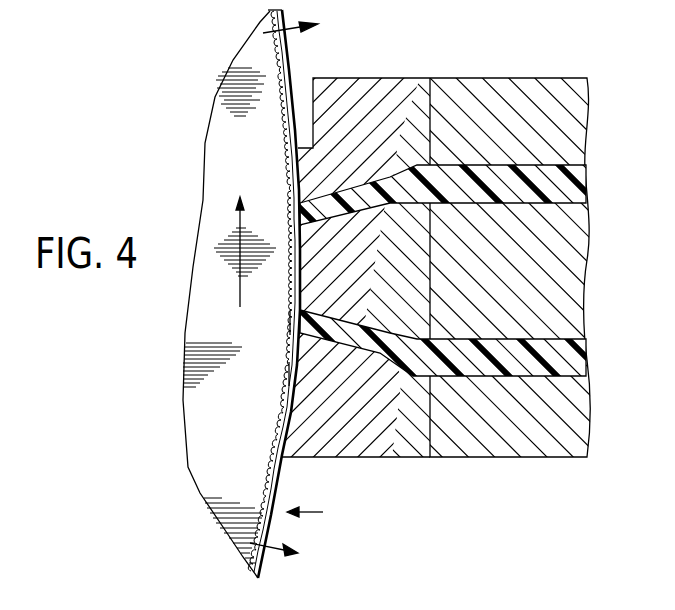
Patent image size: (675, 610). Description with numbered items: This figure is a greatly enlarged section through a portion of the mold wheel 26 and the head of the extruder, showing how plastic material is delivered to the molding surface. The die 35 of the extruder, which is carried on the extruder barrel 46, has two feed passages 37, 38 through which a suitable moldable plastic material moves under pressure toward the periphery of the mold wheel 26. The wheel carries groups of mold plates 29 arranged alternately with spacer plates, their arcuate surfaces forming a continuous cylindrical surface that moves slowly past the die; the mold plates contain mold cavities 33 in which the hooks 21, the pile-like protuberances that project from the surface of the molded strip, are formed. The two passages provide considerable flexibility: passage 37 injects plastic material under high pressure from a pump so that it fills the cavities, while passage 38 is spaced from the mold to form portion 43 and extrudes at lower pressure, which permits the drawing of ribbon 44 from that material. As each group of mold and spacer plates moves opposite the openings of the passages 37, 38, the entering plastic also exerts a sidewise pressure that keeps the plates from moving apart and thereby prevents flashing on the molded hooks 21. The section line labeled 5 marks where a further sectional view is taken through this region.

The section line 5- 5 is at (293, 290).
The hooks 21 is at (290, 335).
The mold wheel 26 is at (320, 513).
The mold plates 29 is at (233, 427).
The mold cavities 33 is at (289, 386).
The die 35 is at (369, 432).
The feed passage 37 is at (353, 345).
The feed passage 38 is at (356, 194).
The portion 43 is at (290, 172).
The ribbon 44 is at (293, 70).
The extruder barrel 46 is at (535, 433).